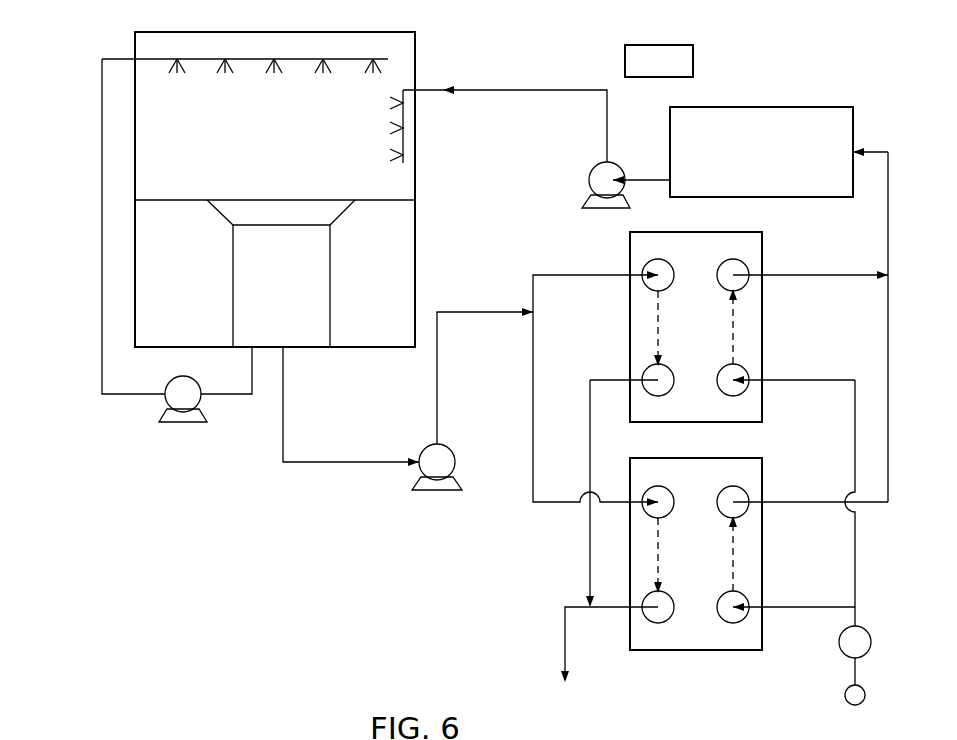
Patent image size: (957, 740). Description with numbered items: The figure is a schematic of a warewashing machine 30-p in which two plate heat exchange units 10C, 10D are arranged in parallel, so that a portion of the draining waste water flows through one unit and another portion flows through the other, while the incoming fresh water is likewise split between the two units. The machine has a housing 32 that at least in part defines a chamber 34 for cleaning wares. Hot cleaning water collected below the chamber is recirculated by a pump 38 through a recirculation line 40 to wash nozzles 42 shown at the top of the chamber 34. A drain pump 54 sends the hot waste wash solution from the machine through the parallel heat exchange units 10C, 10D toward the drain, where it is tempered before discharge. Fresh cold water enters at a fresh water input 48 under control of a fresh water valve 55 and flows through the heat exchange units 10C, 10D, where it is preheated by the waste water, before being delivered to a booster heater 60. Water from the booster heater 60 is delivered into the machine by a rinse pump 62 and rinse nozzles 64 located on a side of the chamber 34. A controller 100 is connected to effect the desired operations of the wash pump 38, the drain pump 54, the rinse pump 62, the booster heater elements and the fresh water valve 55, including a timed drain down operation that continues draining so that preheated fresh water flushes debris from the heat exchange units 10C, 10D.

The machine 30-p is at (331, 180).
The housing 32 is at (417, 182).
The chamber 34 is at (275, 246).
The wash nozzles 42 is at (228, 65).
The recirculation line 40 is at (102, 163).
The pump 38 is at (180, 423).
The drain pump 54 is at (455, 462).
The rinse nozzles 64 is at (407, 137).
The rinse pump 62 is at (589, 180).
The booster heater 60 is at (758, 107).
The controller 100 is at (659, 61).
The heat exchange unit 10D is at (762, 318).
The heat exchange unit 10C is at (695, 650).
The fresh water valve 55 is at (872, 643).
The fresh water input 48 is at (865, 695).